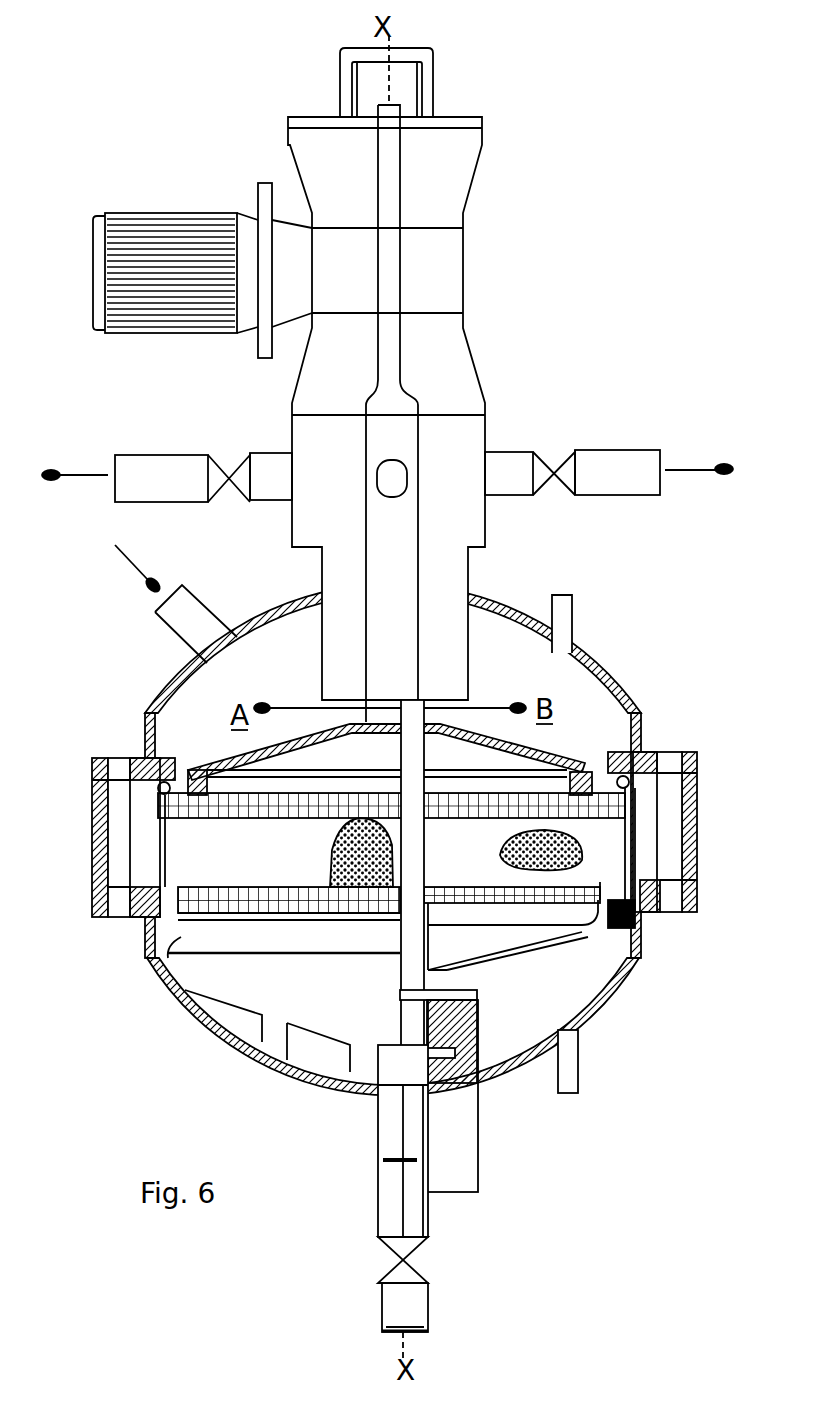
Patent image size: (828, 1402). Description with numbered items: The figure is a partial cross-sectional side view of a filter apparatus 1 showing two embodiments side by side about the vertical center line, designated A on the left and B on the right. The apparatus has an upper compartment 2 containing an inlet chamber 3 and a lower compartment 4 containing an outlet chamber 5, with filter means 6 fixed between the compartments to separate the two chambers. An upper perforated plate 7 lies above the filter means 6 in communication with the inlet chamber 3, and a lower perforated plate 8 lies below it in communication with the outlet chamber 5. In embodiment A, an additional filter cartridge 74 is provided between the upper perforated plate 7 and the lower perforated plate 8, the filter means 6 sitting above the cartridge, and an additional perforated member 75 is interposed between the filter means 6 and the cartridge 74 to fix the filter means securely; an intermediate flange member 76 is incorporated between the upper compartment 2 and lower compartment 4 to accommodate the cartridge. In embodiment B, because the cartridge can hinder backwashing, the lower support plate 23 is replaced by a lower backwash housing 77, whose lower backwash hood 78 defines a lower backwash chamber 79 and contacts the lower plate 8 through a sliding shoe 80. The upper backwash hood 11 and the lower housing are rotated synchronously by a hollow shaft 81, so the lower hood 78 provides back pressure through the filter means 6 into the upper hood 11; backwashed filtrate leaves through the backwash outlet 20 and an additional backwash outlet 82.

The filter apparatus 1 is at (115, 688).
The upper compartment 2 is at (596, 668).
The inlet chamber 3 is at (180, 712).
The lower compartment 4 is at (632, 988).
The outlet chamber 5 is at (315, 1048).
The filter means 6 is at (167, 812).
The upper perforated plate 7 is at (160, 802).
The lower perforated plate 8 is at (167, 900).
The backwash hood 11 is at (553, 757).
The backwash outlet 20 is at (272, 452).
The lower support plate 23 is at (167, 993).
The filter cartridge 74 is at (185, 867).
The additional perforated member 75 is at (160, 823).
The intermediate flange member 76 is at (108, 872).
The lower backwash housing 77 is at (492, 1037).
The lower backwash hood 78 is at (550, 940).
The lower backwash chamber 79 is at (500, 940).
The sliding shoe 80 is at (637, 925).
The hollow shaft 81 is at (397, 663).
The additional backwash outlet 82 is at (519, 450).